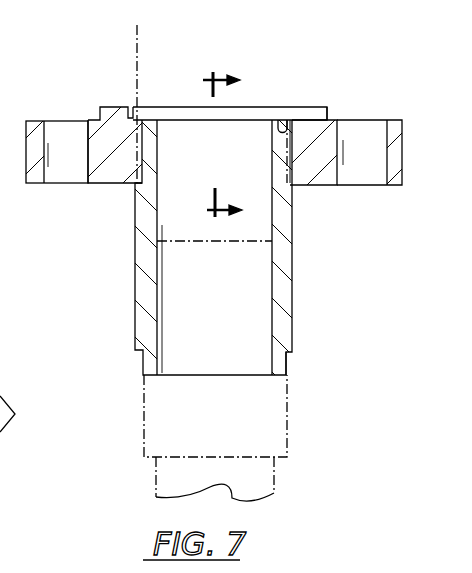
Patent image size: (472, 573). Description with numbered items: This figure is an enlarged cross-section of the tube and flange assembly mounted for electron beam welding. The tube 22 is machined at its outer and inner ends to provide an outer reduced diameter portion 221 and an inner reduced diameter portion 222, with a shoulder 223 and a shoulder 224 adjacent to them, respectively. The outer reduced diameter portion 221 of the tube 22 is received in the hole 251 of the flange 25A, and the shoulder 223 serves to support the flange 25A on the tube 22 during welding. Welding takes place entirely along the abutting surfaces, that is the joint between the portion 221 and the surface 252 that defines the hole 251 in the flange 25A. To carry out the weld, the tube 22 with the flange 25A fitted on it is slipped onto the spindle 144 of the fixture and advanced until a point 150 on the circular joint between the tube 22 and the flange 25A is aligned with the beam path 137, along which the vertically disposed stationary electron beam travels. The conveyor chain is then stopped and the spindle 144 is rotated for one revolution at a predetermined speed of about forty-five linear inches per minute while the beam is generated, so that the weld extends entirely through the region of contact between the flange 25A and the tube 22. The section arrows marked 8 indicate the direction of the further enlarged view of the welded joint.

The tube 22 is at (292, 268).
The shoulder 224 is at (290, 315).
The inner reduced diameter portion 222 is at (288, 362).
The shoulder 223 is at (288, 188).
The outer reduced diameter portion 221 is at (326, 107).
The hole 251 is at (240, 127).
The surface 252 is at (279, 118).
The point 150 is at (141, 117).
The beam path 137 is at (135, 32).
The flange 25A is at (396, 120).
The spindle 144 is at (273, 465).
The section line 8 is at (222, 138).